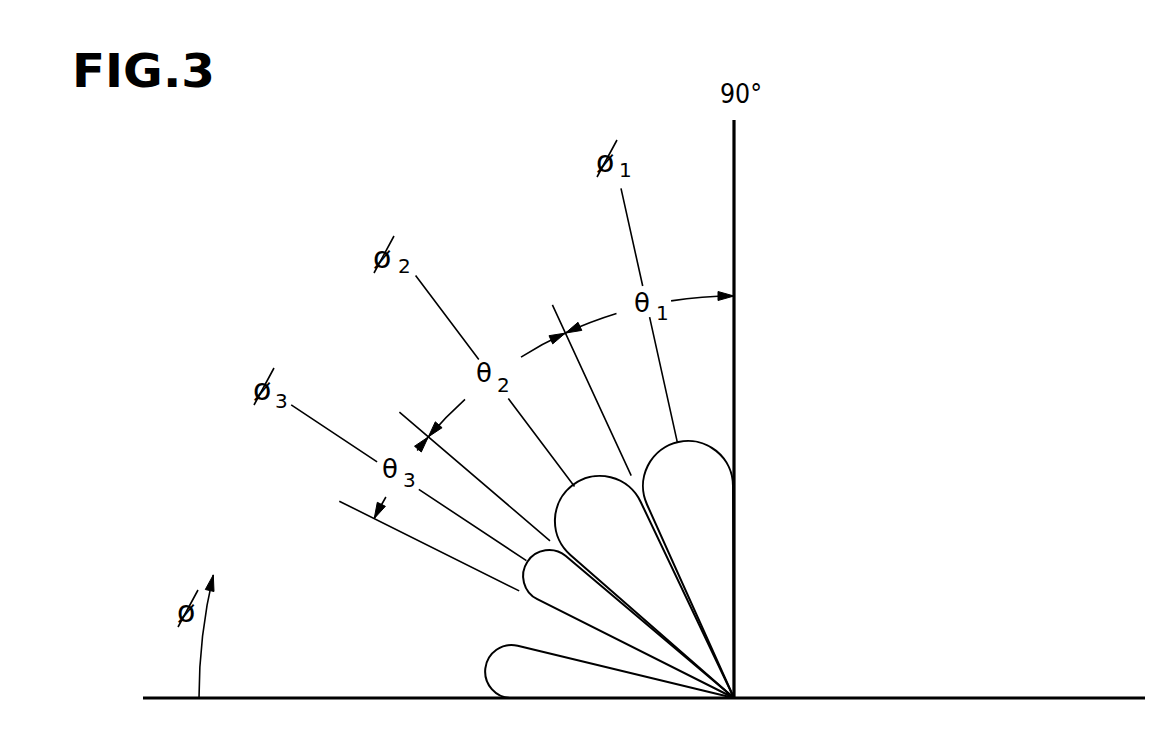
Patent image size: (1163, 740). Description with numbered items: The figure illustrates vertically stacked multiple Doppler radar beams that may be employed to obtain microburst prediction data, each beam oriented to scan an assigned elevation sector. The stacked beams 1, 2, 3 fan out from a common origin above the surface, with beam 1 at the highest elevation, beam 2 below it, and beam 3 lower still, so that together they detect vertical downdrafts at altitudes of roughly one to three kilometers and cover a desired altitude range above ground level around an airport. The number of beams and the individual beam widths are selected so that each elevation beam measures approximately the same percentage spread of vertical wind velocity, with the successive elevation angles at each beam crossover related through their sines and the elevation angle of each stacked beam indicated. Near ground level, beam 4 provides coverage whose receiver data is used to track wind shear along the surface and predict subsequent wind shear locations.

The stacked beam 1 is at (688, 569).
The stacked beam 2 is at (644, 587).
The stacked beam 3 is at (628, 624).
The beam 4 is at (609, 671).